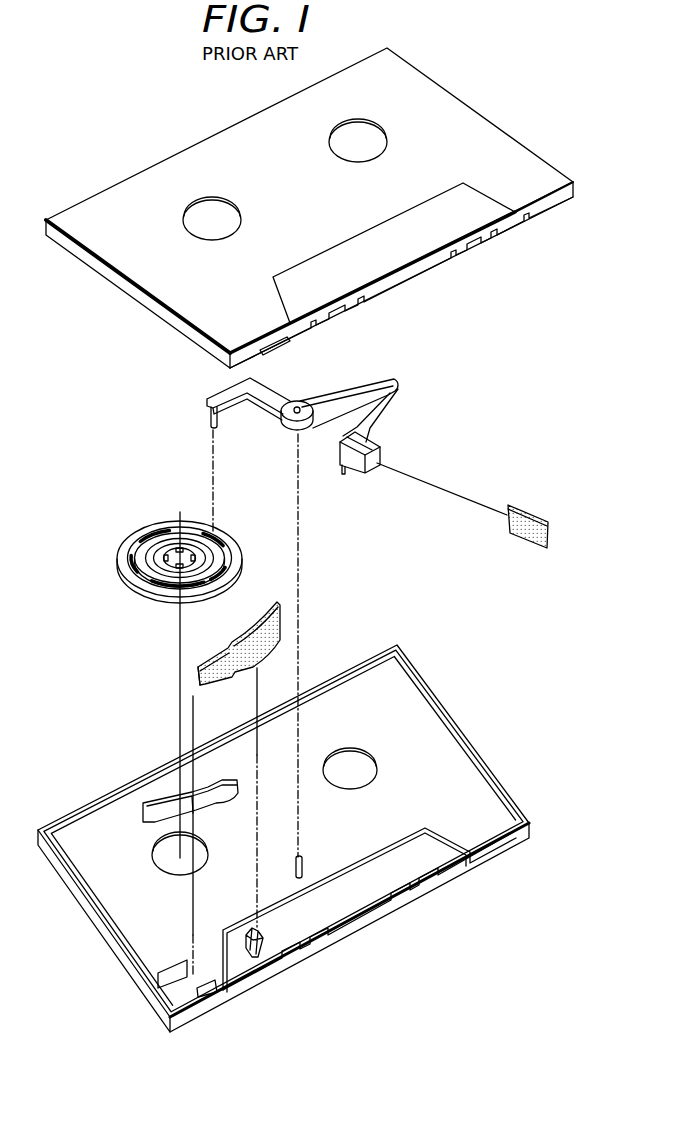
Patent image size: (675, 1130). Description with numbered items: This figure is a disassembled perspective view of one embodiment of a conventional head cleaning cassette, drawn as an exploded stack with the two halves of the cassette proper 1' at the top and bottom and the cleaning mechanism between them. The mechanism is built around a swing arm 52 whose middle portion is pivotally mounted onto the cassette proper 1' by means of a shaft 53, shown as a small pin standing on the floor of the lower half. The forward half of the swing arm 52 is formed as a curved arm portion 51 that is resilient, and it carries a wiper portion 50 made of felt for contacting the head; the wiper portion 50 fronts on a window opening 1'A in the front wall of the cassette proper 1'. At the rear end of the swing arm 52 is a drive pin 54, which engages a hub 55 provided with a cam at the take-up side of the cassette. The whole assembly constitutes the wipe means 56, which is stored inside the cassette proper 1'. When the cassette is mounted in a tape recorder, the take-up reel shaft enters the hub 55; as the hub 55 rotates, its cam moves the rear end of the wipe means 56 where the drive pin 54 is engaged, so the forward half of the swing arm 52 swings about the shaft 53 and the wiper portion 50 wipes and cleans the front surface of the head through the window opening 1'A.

The cassette proper 1' is at (305, 540).
The window opening 1'A is at (376, 907).
The wiper portion 50 is at (510, 540).
The curved arm portion 51 is at (363, 430).
The swing arm 52 is at (357, 427).
The shaft 53 is at (303, 861).
The drive pin 54 is at (217, 420).
The hub 55 is at (232, 565).
The wipe means 56 is at (337, 383).